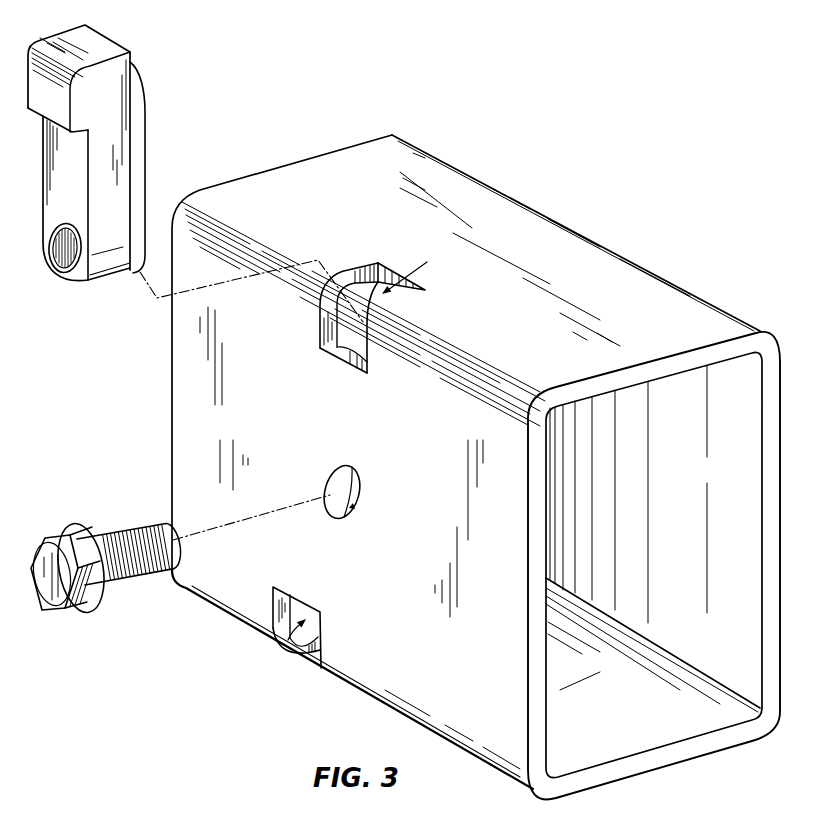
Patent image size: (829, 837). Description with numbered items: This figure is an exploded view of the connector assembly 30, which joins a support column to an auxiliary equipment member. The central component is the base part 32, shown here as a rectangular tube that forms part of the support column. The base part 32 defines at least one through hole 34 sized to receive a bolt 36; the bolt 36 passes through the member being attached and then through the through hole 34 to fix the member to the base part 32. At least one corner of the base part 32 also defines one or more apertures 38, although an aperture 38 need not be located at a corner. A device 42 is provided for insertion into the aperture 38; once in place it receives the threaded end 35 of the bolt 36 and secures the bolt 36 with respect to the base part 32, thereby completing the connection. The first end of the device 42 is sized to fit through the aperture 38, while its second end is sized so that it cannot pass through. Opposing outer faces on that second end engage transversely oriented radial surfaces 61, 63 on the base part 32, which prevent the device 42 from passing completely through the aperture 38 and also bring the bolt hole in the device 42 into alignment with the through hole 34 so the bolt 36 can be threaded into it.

The connector assembly 30 is at (460, 443).
The base part 32 is at (665, 278).
The through hole 34 is at (338, 511).
The threaded end 35 is at (105, 568).
The bolt 36 is at (56, 610).
The aperture 38 is at (254, 651).
The device 42 is at (140, 86).
The radial surface 61 is at (326, 352).
The radial surface 63 is at (282, 306).